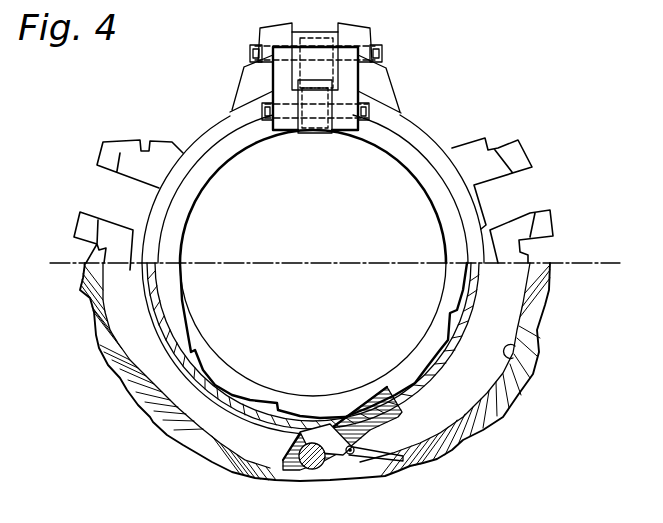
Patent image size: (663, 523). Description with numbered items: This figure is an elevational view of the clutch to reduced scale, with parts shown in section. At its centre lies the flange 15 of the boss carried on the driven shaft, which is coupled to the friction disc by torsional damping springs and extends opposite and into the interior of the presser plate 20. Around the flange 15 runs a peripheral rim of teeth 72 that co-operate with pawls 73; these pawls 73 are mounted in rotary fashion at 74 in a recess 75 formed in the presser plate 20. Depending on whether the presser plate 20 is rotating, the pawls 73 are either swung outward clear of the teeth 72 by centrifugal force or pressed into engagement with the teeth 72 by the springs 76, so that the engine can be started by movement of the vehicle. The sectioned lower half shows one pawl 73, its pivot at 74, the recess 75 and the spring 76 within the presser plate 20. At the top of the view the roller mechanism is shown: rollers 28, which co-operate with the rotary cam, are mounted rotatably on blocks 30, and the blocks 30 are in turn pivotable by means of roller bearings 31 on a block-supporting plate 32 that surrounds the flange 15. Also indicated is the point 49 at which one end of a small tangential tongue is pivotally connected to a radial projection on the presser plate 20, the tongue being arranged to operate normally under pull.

The flange 15 is at (225, 365).
The presser plate 20 is at (497, 397).
The rollers 28 is at (318, 133).
The blocks 30 is at (347, 75).
The roller bearings 31 is at (312, 28).
The block-supporting plate 32 is at (205, 142).
The pivot connection of tongue to radial projection 49 is at (319, 31).
The teeth 72 is at (477, 302).
The pawls 73 is at (405, 420).
The pawl pivot mounting 74 is at (292, 448).
The recess 75 is at (515, 352).
The springs 76 is at (395, 460).